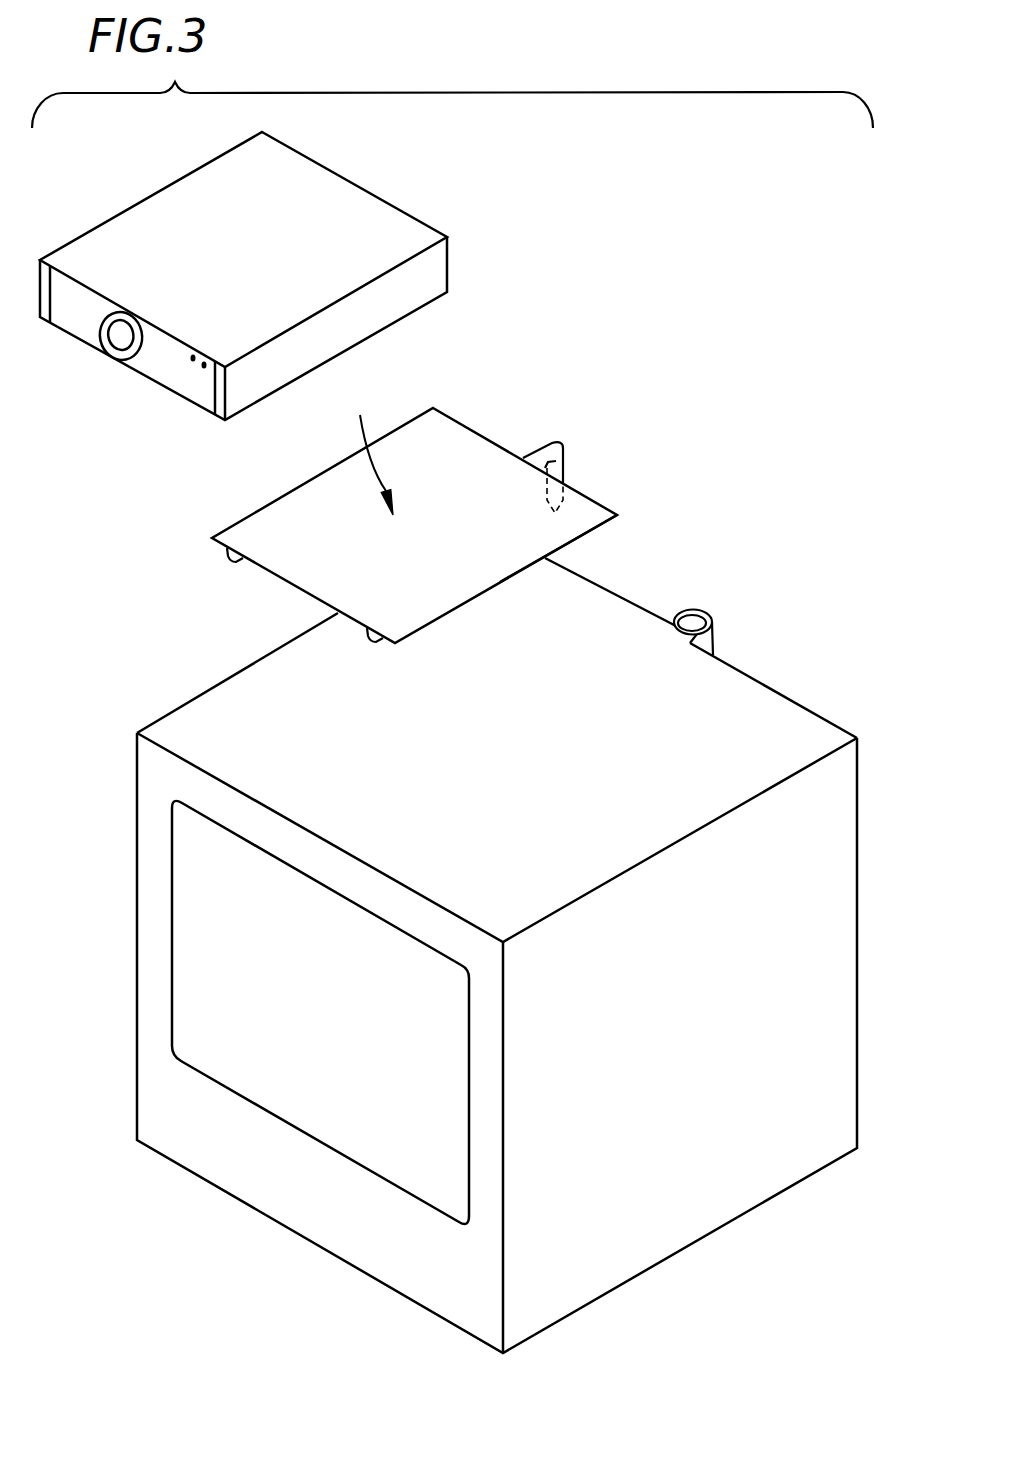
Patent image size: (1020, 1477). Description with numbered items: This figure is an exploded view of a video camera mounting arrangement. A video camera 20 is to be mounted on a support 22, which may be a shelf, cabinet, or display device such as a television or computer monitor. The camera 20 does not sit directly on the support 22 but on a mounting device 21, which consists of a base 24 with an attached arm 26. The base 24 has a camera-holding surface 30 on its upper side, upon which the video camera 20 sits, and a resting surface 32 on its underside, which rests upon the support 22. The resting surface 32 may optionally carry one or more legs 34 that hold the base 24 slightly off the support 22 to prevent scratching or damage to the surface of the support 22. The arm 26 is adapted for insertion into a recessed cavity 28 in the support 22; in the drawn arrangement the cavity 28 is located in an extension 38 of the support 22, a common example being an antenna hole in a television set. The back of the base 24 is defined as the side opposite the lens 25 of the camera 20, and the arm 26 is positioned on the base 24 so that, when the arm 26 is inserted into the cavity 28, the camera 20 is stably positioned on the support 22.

The video camera 20 is at (367, 192).
The mounting device 21 is at (457, 418).
The support 22 is at (858, 787).
The base 24 is at (593, 500).
The lens 25 is at (115, 358).
The arm 26 is at (565, 445).
The recessed cavity 28 is at (692, 618).
The camera-holding surface 30 is at (369, 447).
The resting surface 32 is at (288, 585).
The legs 34 is at (232, 560).
The extension 38 is at (717, 642).